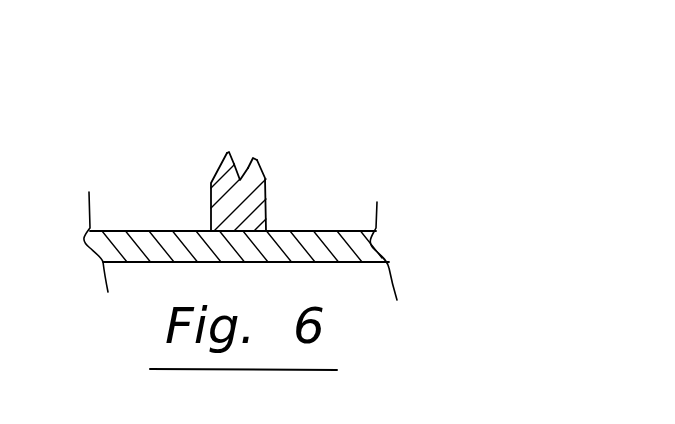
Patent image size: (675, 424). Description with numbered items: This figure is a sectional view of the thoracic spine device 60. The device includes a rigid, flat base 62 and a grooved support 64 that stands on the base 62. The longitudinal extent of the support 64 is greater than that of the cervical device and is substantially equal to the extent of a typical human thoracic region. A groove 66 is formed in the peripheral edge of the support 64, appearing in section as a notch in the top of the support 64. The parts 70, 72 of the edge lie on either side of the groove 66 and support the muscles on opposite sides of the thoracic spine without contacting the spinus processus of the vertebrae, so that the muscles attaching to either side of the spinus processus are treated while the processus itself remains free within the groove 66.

The thoracic spine device 60 is at (176, 80).
The base 62 is at (283, 231).
The grooved support 64 is at (212, 201).
The groove 66 is at (240, 177).
The part of peripheral edge 70 is at (231, 150).
The part of peripheral edge 72 is at (256, 157).